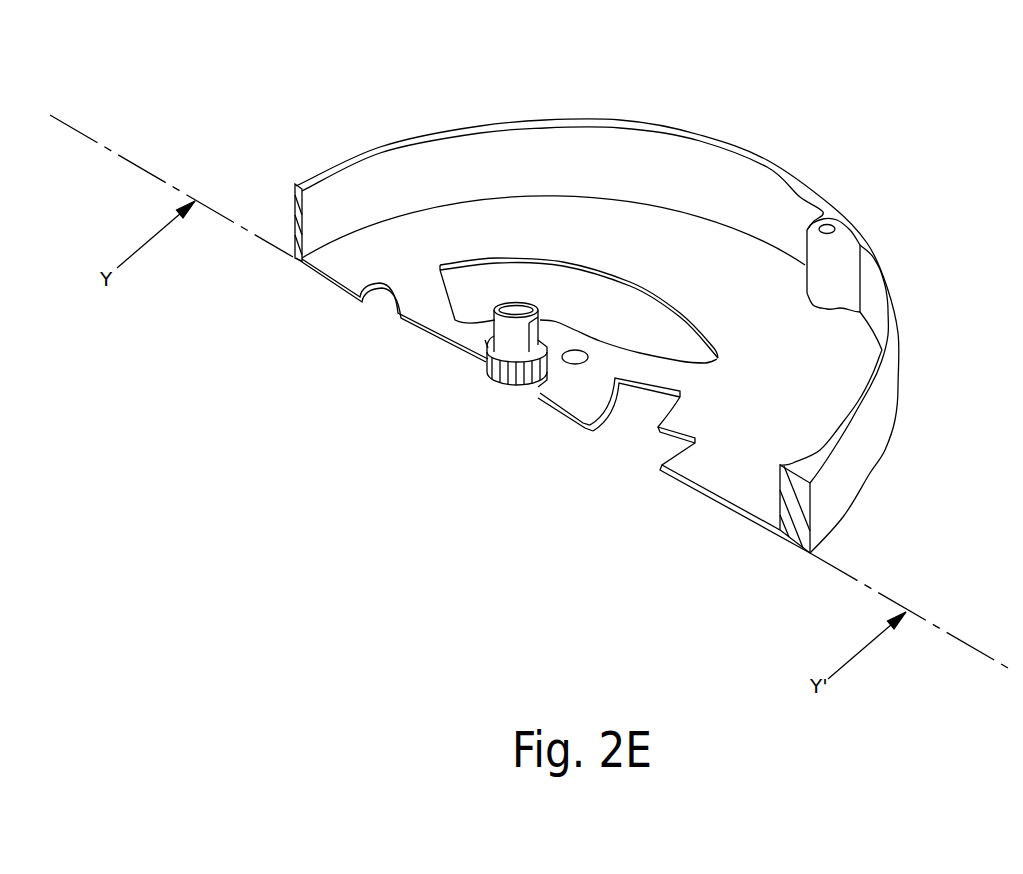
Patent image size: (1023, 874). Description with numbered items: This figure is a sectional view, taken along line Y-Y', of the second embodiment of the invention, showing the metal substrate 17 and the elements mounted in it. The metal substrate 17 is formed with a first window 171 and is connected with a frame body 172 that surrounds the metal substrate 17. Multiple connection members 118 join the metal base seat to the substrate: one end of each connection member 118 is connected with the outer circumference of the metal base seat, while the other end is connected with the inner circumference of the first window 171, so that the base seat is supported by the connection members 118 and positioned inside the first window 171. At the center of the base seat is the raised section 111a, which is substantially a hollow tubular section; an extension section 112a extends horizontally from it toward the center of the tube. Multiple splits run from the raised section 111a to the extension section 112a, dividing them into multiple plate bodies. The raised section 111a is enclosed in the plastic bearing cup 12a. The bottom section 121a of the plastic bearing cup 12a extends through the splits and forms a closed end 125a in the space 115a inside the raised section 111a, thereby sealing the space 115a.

The metal substrate 17 is at (732, 487).
The first window 171 is at (559, 287).
The frame body 172 is at (320, 170).
The connection member 118 is at (652, 363).
The plastic bearing cup 12a is at (452, 319).
The bottom section 121a is at (486, 345).
The extension section 112a is at (488, 353).
The space 115a is at (493, 368).
The closed end 125a is at (512, 383).
The raised section 111a is at (527, 380).